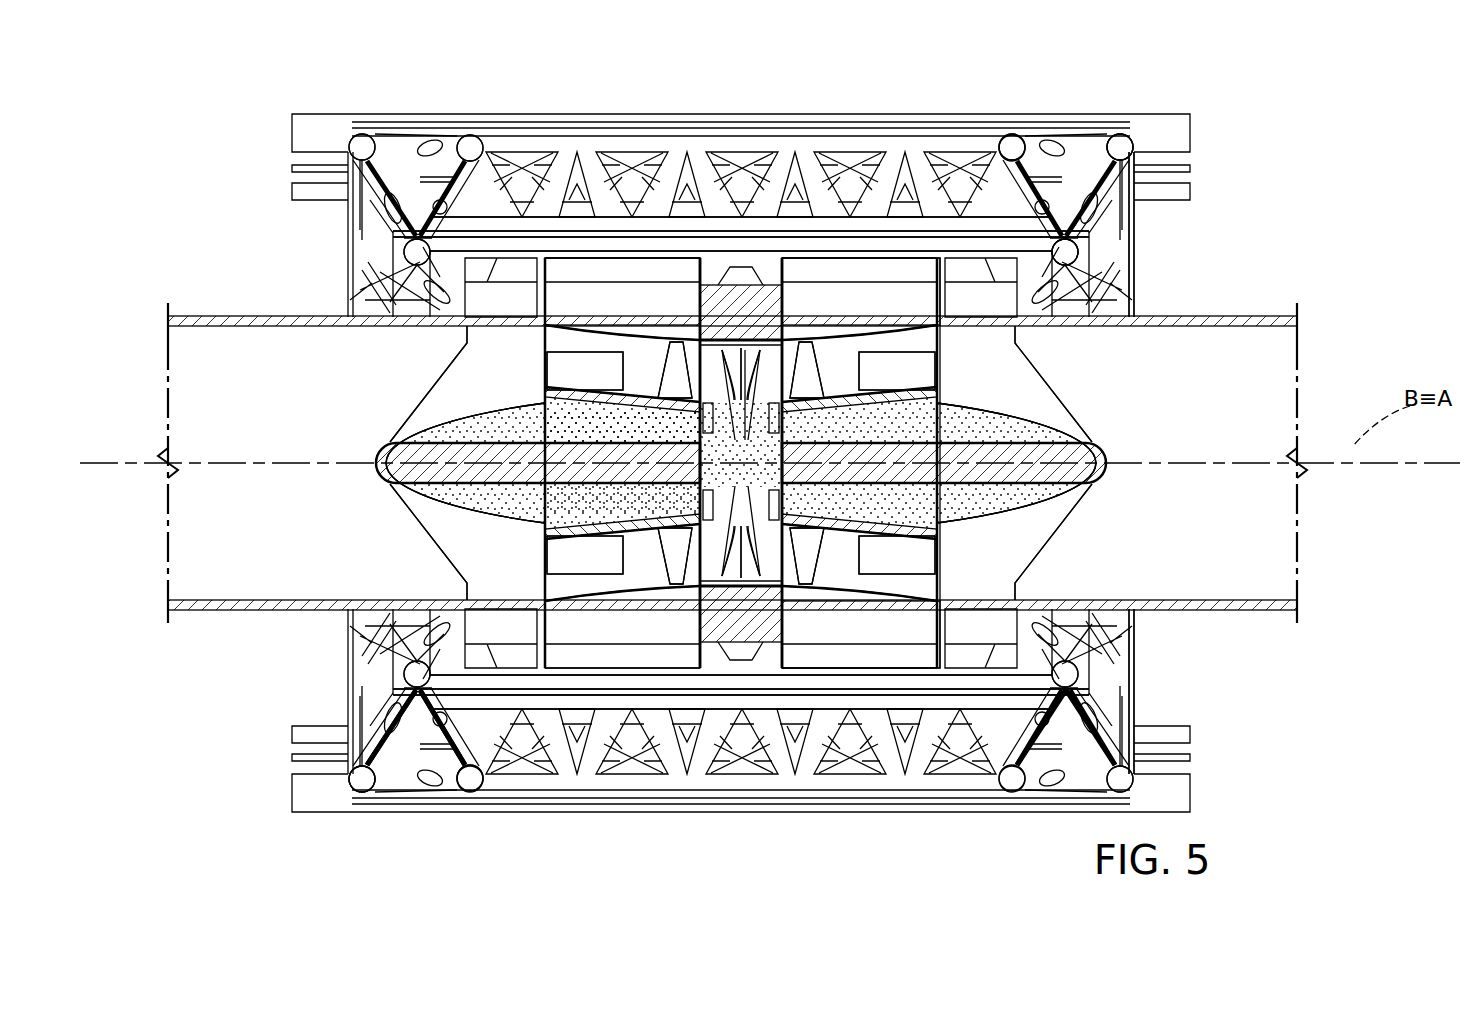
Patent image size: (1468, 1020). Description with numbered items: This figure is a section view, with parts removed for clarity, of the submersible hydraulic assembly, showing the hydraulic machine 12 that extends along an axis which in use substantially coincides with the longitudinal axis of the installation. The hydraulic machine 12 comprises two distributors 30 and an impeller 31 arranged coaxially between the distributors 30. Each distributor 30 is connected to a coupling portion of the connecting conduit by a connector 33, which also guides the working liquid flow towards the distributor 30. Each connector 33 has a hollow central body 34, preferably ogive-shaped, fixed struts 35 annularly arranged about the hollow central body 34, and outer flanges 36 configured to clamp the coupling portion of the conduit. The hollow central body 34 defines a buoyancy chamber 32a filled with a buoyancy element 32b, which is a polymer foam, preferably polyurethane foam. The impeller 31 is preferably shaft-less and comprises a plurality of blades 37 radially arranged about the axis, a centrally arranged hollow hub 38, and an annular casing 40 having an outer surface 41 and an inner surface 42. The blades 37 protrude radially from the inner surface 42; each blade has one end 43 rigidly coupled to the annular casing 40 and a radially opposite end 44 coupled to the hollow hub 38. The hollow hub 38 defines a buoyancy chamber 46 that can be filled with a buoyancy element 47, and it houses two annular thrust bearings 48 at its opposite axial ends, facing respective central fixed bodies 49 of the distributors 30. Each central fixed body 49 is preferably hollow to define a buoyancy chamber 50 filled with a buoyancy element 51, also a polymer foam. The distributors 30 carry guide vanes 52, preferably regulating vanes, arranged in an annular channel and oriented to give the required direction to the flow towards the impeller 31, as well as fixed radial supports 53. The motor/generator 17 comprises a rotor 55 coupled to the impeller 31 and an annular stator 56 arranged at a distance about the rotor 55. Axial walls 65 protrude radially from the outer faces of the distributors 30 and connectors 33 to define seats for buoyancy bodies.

The hydraulic machine 12 is at (623, 300).
The motor/generator 17 is at (720, 640).
The distributor 30 is at (575, 297).
The impeller 31 is at (713, 303).
The buoyancy chamber 32a is at (430, 447).
The buoyancy element 32b is at (470, 482).
The connector 33 is at (433, 360).
The hollow central body 34 is at (413, 430).
The fixed struts 35 is at (437, 397).
The outer flanges 36 is at (400, 292).
The blades 37 is at (718, 358).
The hollow hub 38 is at (935, 625).
The annular casing 40 is at (847, 323).
The outer surface 41 is at (742, 337).
The inner surface 42 is at (772, 358).
The end 43 is at (752, 320).
The radially opposite end 44 is at (690, 441).
The buoyancy chamber 46 is at (1060, 335).
The buoyancy element 47 is at (790, 490).
The annular thrust bearings 48 is at (658, 242).
The central fixed body 49 is at (1030, 300).
The buoyancy chamber 50 is at (520, 600).
The buoyancy element 51 is at (540, 408).
The guide vanes 52 is at (660, 348).
The fixed radial supports 53 is at (544, 370).
The rotor 55 is at (773, 350).
The annular stator 56 is at (693, 338).
The axial walls 65 is at (472, 136).